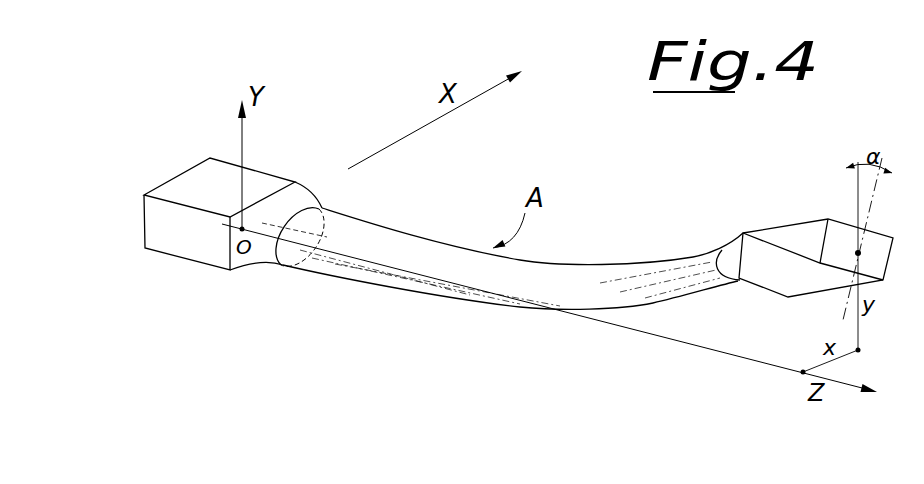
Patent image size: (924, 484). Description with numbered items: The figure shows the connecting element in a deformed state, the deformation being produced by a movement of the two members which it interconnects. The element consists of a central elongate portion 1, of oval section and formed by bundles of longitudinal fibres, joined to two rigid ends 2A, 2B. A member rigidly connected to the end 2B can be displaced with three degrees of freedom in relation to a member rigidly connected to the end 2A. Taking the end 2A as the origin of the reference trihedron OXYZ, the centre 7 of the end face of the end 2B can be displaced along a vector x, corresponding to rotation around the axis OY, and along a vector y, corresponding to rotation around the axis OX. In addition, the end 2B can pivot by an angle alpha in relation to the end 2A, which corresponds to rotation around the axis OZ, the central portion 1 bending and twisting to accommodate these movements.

The central elongate portion 1 is at (452, 293).
The rigid end 2A is at (262, 182).
The rigid end 2B is at (775, 240).
The centre of the end face 7 is at (860, 252).